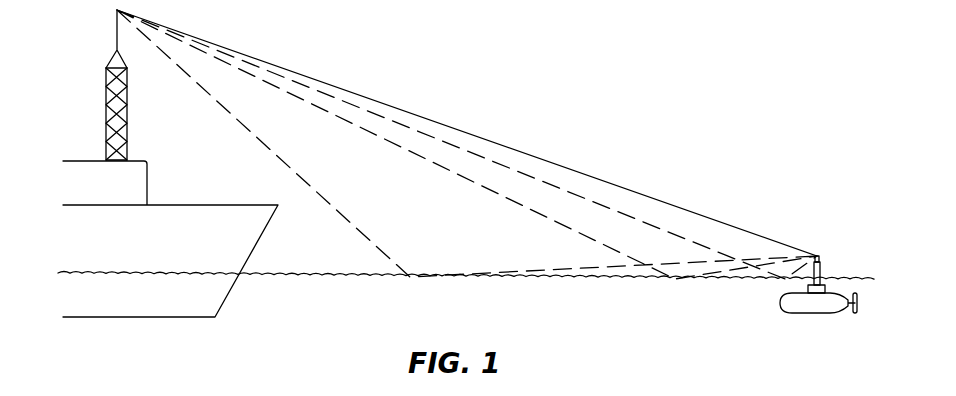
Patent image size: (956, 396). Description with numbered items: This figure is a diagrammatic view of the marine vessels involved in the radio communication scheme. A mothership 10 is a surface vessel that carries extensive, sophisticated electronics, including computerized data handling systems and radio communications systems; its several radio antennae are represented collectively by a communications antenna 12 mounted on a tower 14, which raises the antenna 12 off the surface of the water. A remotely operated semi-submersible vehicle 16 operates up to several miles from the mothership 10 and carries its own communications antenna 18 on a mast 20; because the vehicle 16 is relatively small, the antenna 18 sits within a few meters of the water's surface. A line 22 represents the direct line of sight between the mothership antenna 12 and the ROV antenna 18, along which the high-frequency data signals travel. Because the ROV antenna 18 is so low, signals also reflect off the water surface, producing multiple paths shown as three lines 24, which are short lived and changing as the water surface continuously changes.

The mothership 10 is at (204, 205).
The communications antenna 12 is at (116, 41).
The tower 14 is at (106, 117).
The remotely operated semi-submersible vehicle 16 is at (793, 313).
The communications antenna 18 is at (818, 257).
The mast 20 is at (821, 272).
The line 22 is at (606, 181).
The lines 24 is at (360, 233).